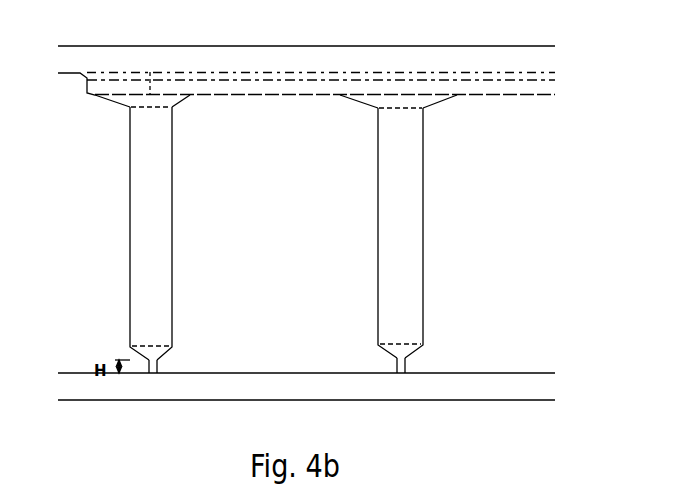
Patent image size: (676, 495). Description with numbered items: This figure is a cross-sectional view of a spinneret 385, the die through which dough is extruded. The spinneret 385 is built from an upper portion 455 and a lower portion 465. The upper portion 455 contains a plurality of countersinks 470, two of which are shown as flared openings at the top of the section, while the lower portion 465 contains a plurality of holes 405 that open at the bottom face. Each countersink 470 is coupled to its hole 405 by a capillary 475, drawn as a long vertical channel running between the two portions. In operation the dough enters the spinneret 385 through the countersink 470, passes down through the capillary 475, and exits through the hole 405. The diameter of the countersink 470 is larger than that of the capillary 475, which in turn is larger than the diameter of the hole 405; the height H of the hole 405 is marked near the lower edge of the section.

The upper portion 455 is at (321, 75).
The countersink 470 is at (189, 99).
The capillary 475 is at (155, 250).
The hole 405 is at (153, 373).
The lower portion 465 is at (306, 384).
The spinneret 385 is at (306, 413).